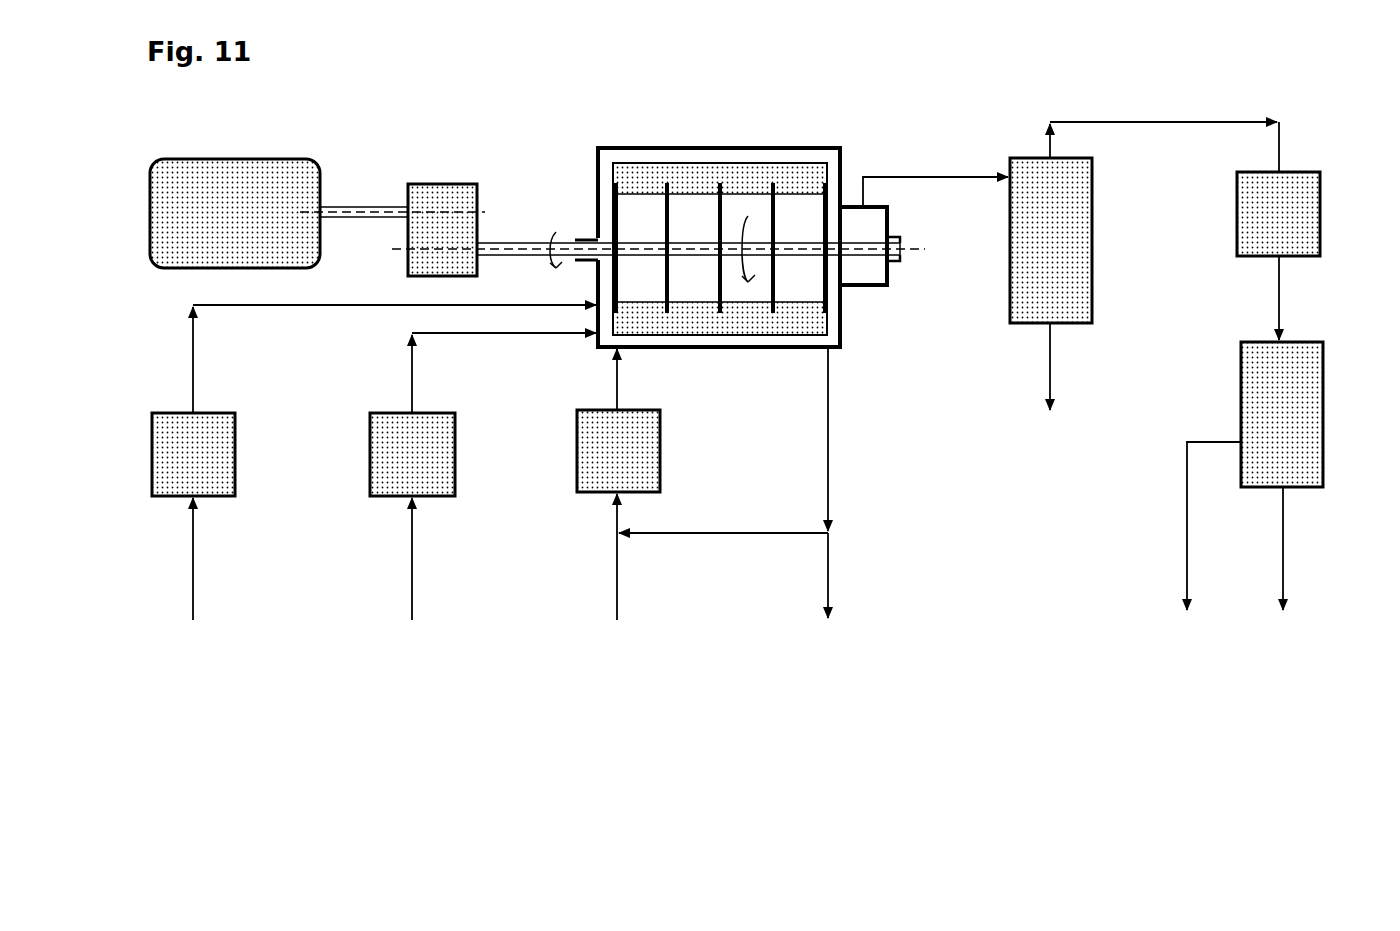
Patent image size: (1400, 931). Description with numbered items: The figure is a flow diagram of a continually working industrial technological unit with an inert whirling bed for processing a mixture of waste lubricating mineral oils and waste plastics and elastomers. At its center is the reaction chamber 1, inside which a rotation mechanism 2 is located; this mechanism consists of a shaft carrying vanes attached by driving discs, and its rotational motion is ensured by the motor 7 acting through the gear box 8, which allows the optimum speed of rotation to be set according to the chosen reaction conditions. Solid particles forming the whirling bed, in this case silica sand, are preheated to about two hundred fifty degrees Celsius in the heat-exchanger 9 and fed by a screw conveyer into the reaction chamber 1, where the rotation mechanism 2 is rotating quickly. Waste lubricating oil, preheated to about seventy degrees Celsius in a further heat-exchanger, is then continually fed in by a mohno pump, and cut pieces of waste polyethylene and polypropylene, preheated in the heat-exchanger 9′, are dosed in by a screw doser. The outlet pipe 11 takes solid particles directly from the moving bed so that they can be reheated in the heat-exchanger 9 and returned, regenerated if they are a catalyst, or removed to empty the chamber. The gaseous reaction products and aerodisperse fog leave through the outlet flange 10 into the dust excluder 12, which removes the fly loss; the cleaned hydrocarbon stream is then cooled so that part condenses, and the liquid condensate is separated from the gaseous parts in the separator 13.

The reaction chamber 1 is at (731, 228).
The rotation mechanism 2 is at (680, 180).
The motor 7 is at (275, 159).
The gear box 8 is at (445, 184).
The heat-exchanger 9 is at (660, 440).
The heat-exchanger 9′ is at (455, 478).
The outlet flange 10 is at (918, 173).
The outlet pipe 11 is at (828, 440).
The dust excluder 12 is at (1092, 245).
The separator 13 is at (1300, 342).